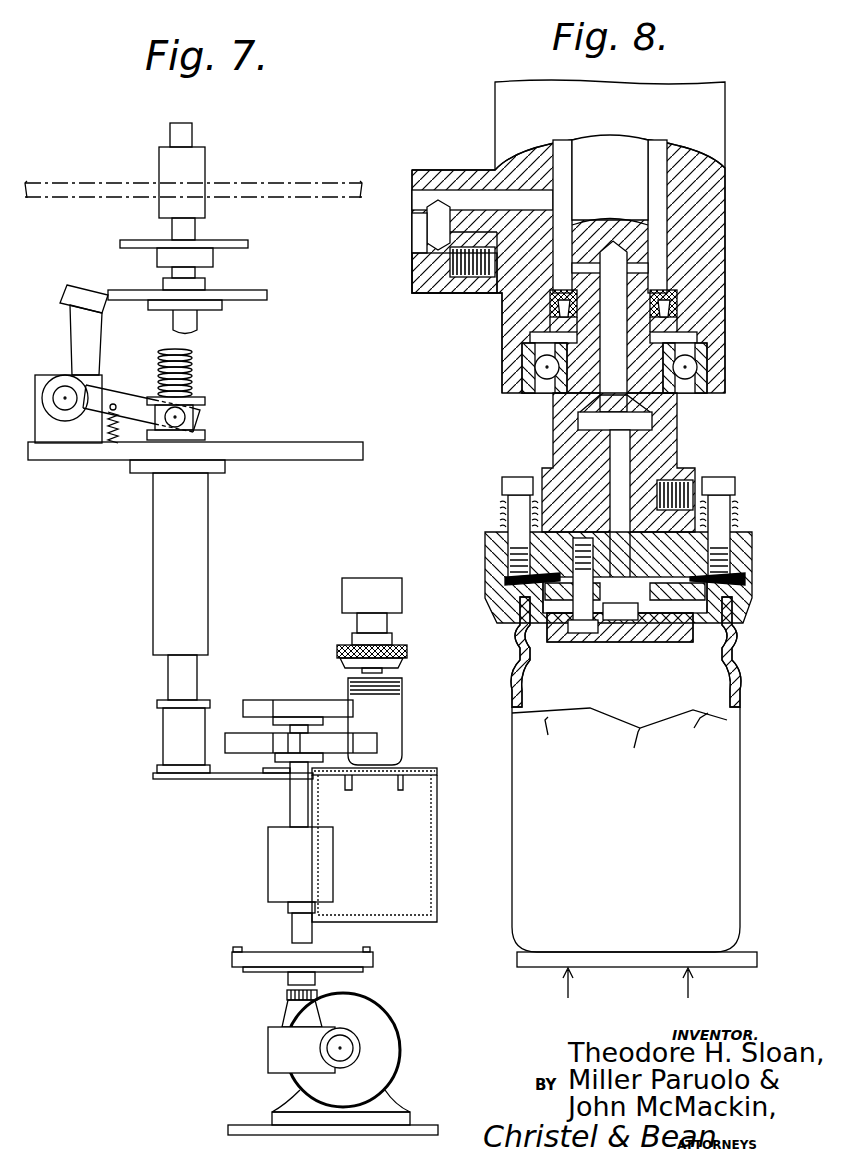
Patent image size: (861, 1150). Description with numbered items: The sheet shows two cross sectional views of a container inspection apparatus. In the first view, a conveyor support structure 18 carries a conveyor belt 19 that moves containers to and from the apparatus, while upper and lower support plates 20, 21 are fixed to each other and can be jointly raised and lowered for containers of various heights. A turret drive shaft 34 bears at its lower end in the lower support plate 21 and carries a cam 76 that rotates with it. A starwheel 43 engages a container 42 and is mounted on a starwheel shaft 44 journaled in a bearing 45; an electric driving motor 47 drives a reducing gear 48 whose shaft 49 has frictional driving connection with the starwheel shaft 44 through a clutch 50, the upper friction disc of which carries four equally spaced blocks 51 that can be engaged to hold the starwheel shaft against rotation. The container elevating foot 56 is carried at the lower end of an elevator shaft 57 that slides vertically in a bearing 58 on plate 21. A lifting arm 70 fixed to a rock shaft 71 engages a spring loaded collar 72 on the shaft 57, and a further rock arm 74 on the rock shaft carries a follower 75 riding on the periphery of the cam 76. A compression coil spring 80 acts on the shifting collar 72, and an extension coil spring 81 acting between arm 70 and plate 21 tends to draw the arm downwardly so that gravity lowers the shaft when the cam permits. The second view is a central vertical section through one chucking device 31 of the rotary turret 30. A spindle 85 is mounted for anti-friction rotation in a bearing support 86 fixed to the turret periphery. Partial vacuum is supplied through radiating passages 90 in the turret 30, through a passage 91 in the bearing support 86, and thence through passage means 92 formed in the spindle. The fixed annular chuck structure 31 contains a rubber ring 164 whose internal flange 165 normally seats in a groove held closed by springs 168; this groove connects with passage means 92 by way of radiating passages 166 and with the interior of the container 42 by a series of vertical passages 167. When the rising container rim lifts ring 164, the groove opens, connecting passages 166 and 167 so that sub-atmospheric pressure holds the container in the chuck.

In FIG. 7, the conveyor support structure 18 is at (437, 809).
In FIG. 7, the conveyor belt 19 is at (425, 770).
In FIG. 7, the upper support plate 20 is at (322, 182).
In FIG. 7, the lower support plate 21 is at (327, 445).
In FIG. 8, the rotary turret 30 is at (483, 295).
In FIG. 7, the chucking device 31 is at (407, 652).
In FIG. 8, the chucking device 31 is at (752, 552).
In FIG. 7, the turret drive shaft 34 is at (183, 138).
In FIG. 7, the container 42 is at (402, 717).
In FIG. 8, the container 42 is at (725, 801).
In FIG. 7, the starwheel 43 is at (255, 746).
In FIG. 7, the starwheel shaft 44 is at (292, 800).
In FIG. 7, the bearing 45 is at (272, 853).
In FIG. 7, the electric driving motor 47 is at (385, 1040).
In FIG. 7, the reducing gear 48 is at (268, 1048).
In FIG. 7, the shaft 49 is at (288, 997).
In FIG. 7, the clutch 50 is at (258, 960).
In FIG. 7, the blocks 51 is at (290, 954).
In FIG. 7, the container elevating foot 56 is at (210, 779).
In FIG. 8, the container elevating foot 56 is at (747, 957).
In FIG. 7, the elevator shaft 57 is at (185, 679).
In FIG. 7, the bearing 58 is at (197, 510).
In FIG. 7, the lifting arm 70 is at (123, 400).
In FIG. 7, the rock shaft 71 is at (60, 388).
In FIG. 7, the spring loaded collar 72 is at (205, 398).
In FIG. 7, the rock arm 74 is at (72, 325).
In FIG. 7, the follower 75 is at (78, 290).
In FIG. 7, the cam 76 is at (228, 296).
In FIG. 7, the compression coil spring 80 is at (182, 353).
In FIG. 7, the extension coil spring 81 is at (126, 438).
In FIG. 8, the spindle 85 is at (632, 180).
In FIG. 8, the bearing support 86 is at (715, 132).
In FIG. 8, the radiating passages 90 is at (425, 270).
In FIG. 8, the passage 91 is at (423, 203).
In FIG. 8, the passage means 92 is at (617, 455).
In FIG. 8, the rubber ring 164 is at (540, 598).
In FIG. 8, the internal flange 165 is at (547, 600).
In FIG. 8, the radiating passages 166 is at (660, 622).
In FIG. 8, the vertical passages 167 is at (567, 641).
In FIG. 8, the springs 168 is at (555, 577).